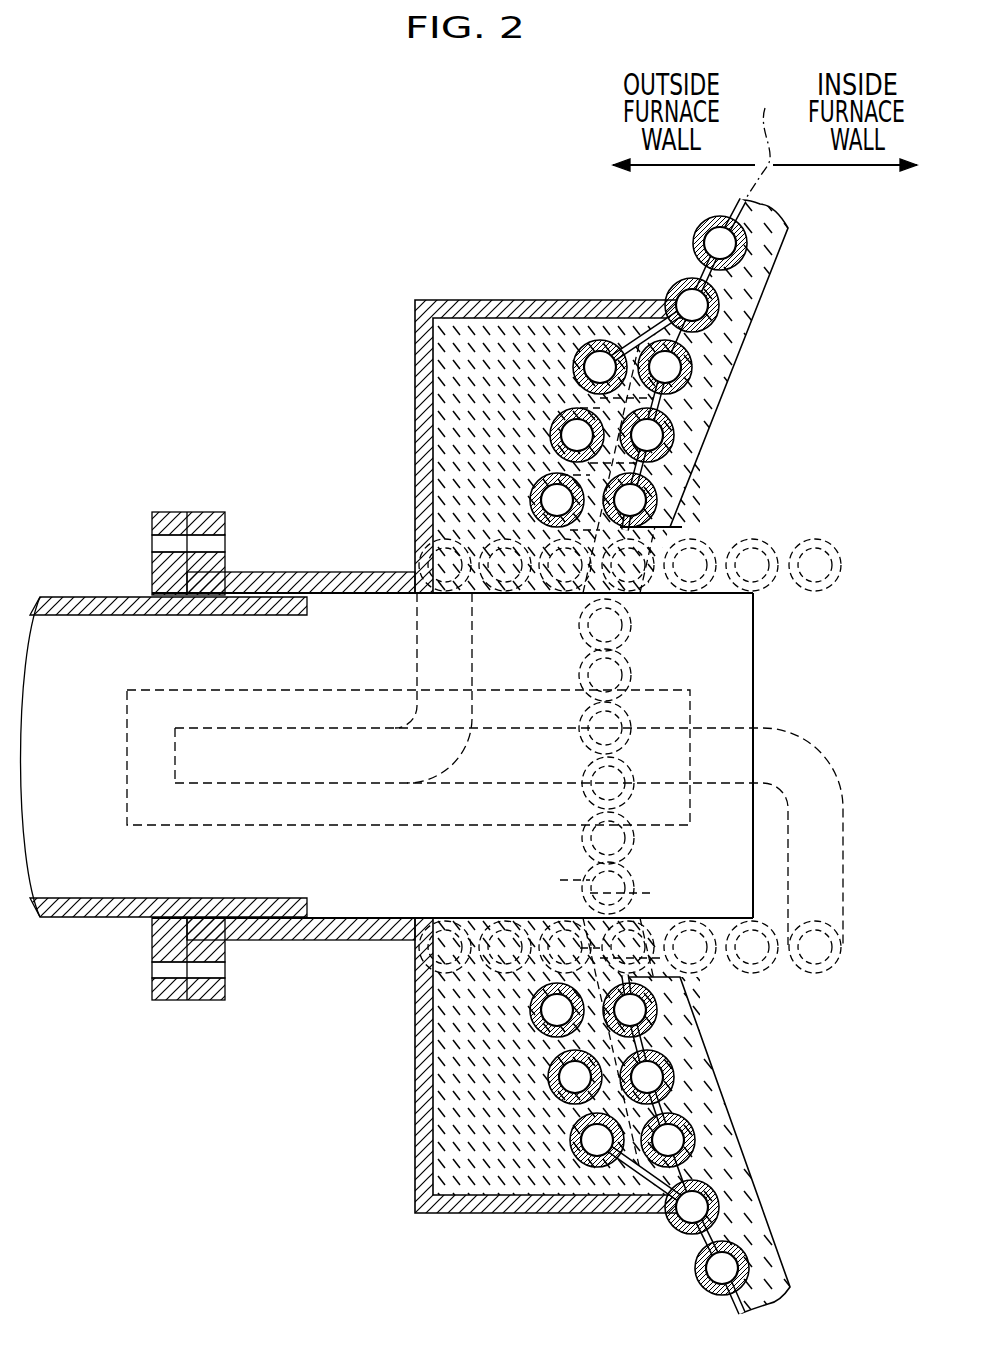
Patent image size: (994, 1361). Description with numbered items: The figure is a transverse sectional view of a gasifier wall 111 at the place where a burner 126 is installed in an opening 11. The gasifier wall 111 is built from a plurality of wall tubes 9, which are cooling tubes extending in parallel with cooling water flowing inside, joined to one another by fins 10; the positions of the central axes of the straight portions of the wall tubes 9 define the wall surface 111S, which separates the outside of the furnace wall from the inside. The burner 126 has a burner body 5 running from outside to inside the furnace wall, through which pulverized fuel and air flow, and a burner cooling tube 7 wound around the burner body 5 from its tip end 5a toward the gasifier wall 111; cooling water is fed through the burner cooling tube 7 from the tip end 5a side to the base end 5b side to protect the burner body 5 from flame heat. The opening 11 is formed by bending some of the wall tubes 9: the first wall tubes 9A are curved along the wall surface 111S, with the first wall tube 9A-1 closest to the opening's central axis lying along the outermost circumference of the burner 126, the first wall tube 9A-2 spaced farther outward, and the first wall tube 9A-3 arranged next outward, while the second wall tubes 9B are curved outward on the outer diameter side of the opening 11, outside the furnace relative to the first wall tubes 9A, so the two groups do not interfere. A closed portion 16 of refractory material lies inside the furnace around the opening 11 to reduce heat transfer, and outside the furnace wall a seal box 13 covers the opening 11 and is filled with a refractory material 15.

The burner body 5 is at (281, 572).
The tip end 5a is at (756, 685).
The base end 5b is at (80, 918).
The burner cooling tube 7 is at (838, 553).
The wall tube 9 is at (625, 742).
The first wall tube 9A is at (692, 366).
The second wall tube 9B is at (573, 368).
The first wall tube 9A-1 is at (578, 724).
The first wall tube 9A-2 is at (578, 676).
The first wall tube 9A-3 is at (578, 627).
The fin 10 is at (640, 340).
The opening 11 is at (669, 528).
The seal box 13 is at (476, 300).
The refractory material 15 is at (447, 337).
The closed portion 16 is at (762, 262).
The gasifier wall 111 is at (749, 756).
The wall surface 111S is at (761, 136).
The burner 126 is at (760, 630).